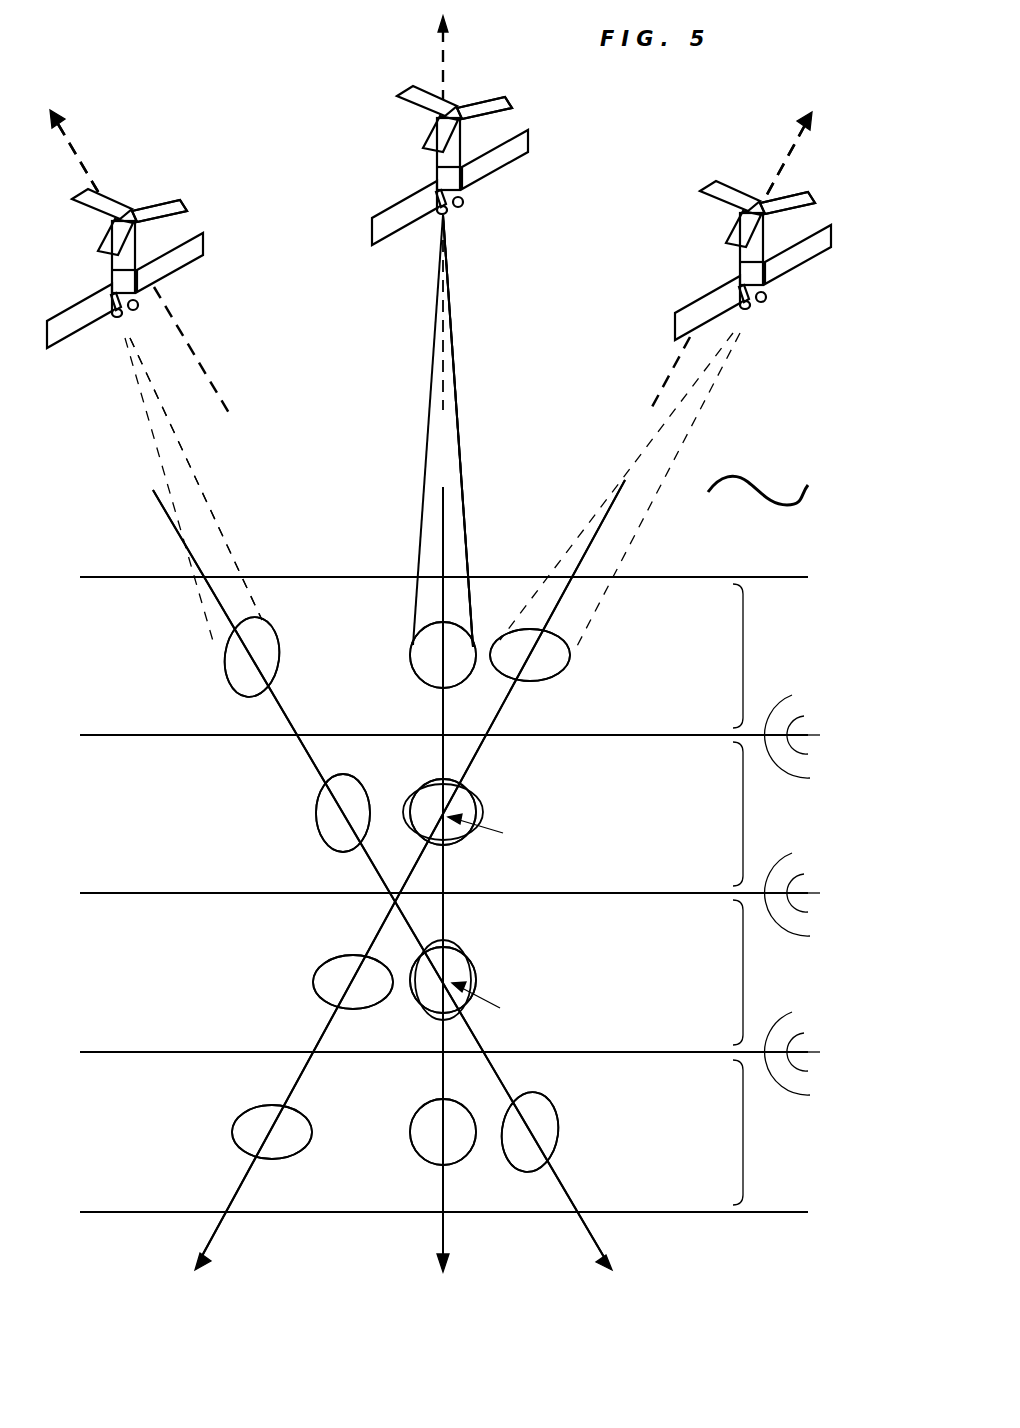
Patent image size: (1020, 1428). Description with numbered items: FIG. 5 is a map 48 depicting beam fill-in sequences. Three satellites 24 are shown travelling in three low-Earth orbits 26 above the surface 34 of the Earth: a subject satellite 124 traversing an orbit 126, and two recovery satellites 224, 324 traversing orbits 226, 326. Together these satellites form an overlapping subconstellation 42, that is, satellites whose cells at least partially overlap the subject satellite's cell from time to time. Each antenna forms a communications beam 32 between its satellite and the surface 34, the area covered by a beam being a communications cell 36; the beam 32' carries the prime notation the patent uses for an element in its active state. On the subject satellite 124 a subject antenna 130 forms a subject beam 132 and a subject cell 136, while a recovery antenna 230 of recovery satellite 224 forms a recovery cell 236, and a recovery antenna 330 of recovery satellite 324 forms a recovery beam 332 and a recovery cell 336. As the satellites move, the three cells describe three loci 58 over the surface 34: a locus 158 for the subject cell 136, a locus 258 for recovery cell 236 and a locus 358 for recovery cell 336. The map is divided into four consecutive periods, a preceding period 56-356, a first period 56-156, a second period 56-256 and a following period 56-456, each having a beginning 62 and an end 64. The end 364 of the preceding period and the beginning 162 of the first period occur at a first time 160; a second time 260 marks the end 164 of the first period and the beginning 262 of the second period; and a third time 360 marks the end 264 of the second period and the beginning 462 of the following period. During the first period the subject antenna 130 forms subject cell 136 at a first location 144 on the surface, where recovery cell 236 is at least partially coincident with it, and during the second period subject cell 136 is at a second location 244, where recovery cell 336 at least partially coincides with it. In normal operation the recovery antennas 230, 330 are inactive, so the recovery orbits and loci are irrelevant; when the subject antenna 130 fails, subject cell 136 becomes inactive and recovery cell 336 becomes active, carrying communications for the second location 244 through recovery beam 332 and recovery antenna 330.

The satellite 24 is at (442, 175).
The low-Earth orbit 26 is at (445, 43).
The orbit 126 is at (443, 58).
The orbit 226 is at (790, 152).
The orbit 326 is at (75, 143).
The subject satellite 124 is at (503, 97).
The recovery satellite 224 is at (718, 190).
The recovery satellite 324 is at (173, 203).
The subject antenna 130 is at (438, 210).
The recovery antenna 230 is at (750, 308).
The recovery antenna 330 is at (120, 323).
The communications beam 32 is at (416, 432).
The sensor beam edge 32' is at (478, 431).
The subject beam 132 is at (458, 387).
The recovery beam 332 is at (146, 406).
The surface of the Earth 34 is at (748, 478).
The communications cell 36 is at (223, 667).
The subject cell 136 is at (423, 685).
The recovery cell 236 is at (545, 685).
The recovery cell 336 is at (238, 693).
The overlapping subconstellation 42 is at (815, 311).
The map 48 is at (663, 111).
The locus 58 is at (443, 508).
The locus 158 is at (443, 537).
The locus 258 is at (597, 523).
The locus 358 is at (173, 527).
The beginning of period 62 is at (785, 580).
The end of period 64 is at (785, 1210).
The preceding period 56-356 is at (777, 652).
The first period 56-156 is at (775, 810).
The second period 56-256 is at (780, 975).
The following period 56-456 is at (777, 1128).
The first location 144 is at (495, 834).
The second location 244 is at (496, 1005).
The first time 160 is at (842, 742).
The second time 260 is at (835, 898).
The third time 360 is at (836, 1058).
The beginning of first period 162 is at (819, 749).
The beginning of second period 262 is at (820, 908).
The beginning of following period 462 is at (820, 1065).
The end of first period 164 is at (821, 875).
The end of second period 264 is at (821, 1035).
The end of preceding period 364 is at (821, 717).